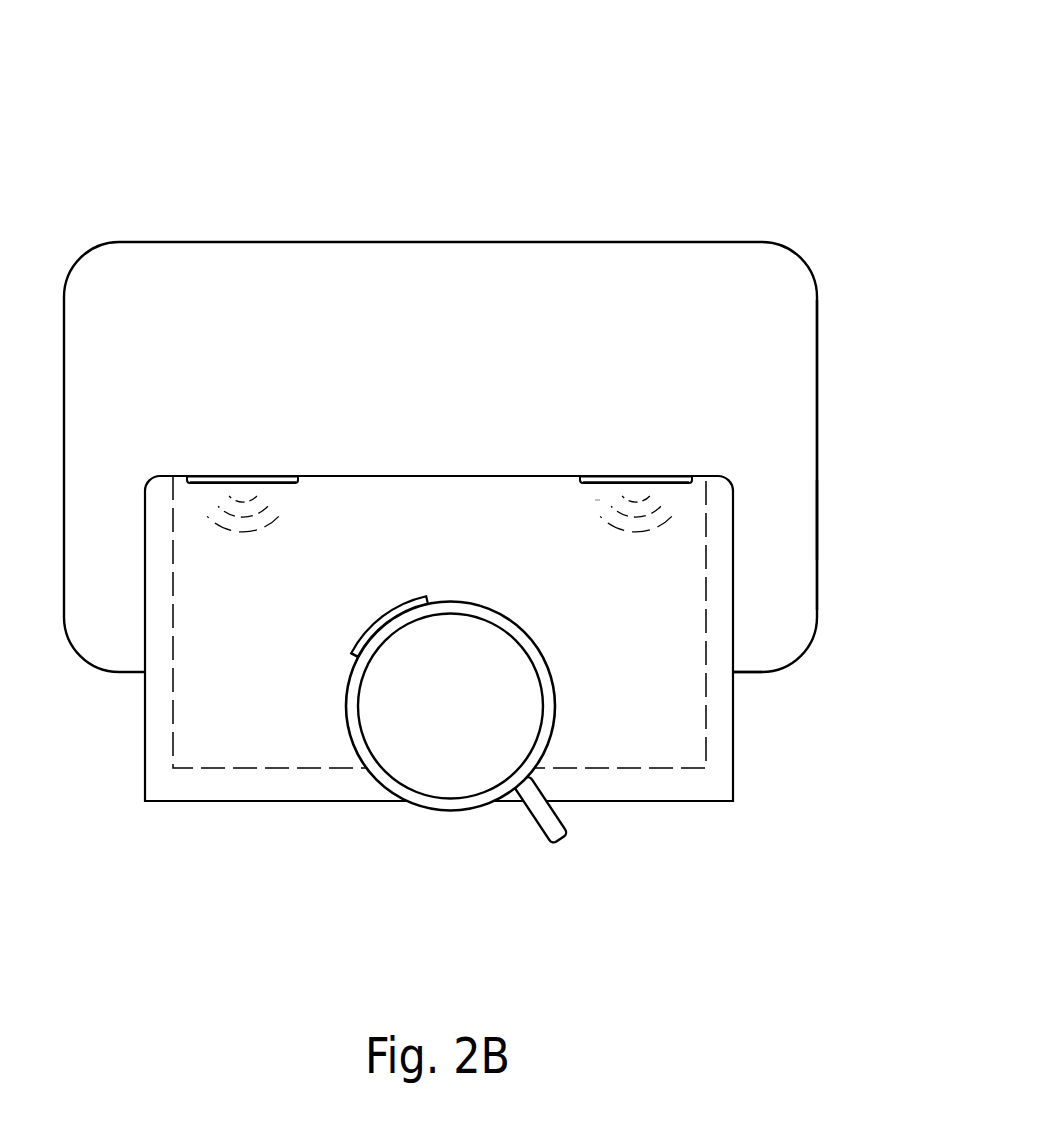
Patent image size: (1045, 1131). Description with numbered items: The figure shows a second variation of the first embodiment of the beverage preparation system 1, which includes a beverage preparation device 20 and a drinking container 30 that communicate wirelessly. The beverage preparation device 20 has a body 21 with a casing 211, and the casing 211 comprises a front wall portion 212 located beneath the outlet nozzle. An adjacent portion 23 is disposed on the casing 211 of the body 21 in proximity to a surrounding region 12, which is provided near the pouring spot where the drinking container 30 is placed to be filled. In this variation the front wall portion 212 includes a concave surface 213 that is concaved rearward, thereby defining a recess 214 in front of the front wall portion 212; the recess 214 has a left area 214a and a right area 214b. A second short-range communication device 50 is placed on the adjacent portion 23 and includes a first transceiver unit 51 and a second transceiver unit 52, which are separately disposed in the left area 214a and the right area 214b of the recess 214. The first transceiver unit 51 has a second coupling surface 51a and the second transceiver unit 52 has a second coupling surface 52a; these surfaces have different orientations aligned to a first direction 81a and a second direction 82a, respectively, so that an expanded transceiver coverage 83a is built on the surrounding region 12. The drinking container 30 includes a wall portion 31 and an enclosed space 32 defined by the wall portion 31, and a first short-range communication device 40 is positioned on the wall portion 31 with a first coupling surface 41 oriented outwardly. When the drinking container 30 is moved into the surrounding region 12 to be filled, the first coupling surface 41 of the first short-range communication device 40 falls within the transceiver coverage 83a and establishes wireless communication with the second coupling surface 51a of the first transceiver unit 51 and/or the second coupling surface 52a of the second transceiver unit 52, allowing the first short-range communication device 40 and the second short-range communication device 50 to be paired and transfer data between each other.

The beverage preparation system 1 is at (47, 36).
The beverage preparation device 20 is at (824, 266).
The body 21 is at (804, 393).
The casing 211 is at (818, 518).
The front wall portion 212 is at (759, 684).
The concave surface 213 is at (148, 477).
The recess 214 is at (345, 536).
The left area 214a is at (302, 490).
The right area 214b is at (576, 489).
The adjacent portion 23 is at (591, 507).
The second short-range communication device 50 is at (348, 308).
The first transceiver unit 51 is at (242, 476).
The second transceiver unit 52 is at (637, 476).
The second coupling surface 51a is at (204, 486).
The second coupling surface 52a is at (676, 486).
The first direction 81a is at (242, 539).
The second direction 82a is at (640, 536).
The transceiver coverage 83a is at (173, 735).
The drinking container 30 is at (315, 887).
The wall portion 31 is at (387, 782).
The enclosed space 32 is at (448, 774).
The surrounding region 12 is at (569, 673).
The first short-range communication device 40 is at (390, 617).
The first coupling surface 41 is at (352, 636).